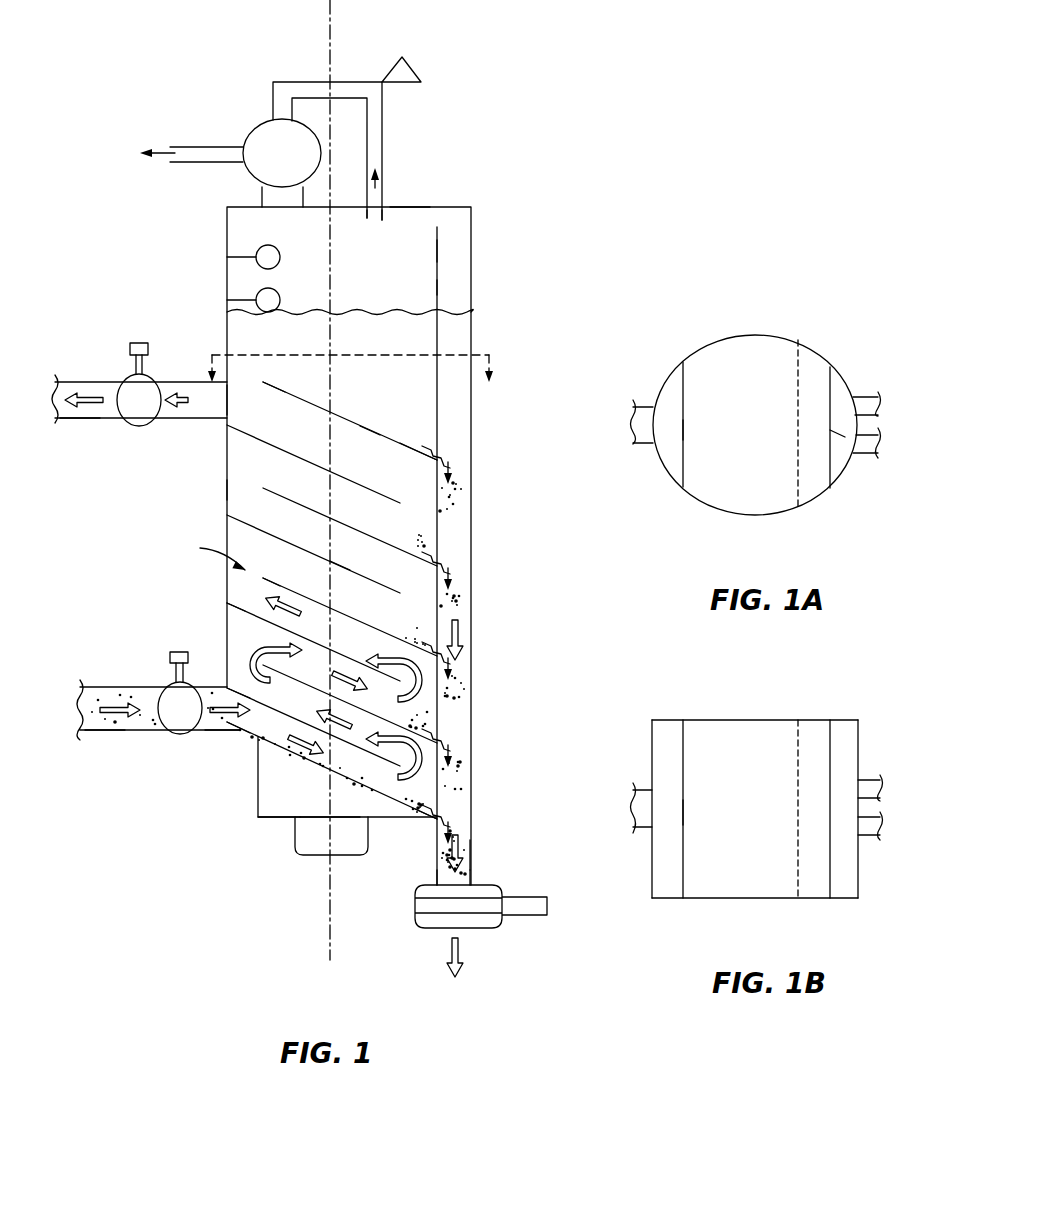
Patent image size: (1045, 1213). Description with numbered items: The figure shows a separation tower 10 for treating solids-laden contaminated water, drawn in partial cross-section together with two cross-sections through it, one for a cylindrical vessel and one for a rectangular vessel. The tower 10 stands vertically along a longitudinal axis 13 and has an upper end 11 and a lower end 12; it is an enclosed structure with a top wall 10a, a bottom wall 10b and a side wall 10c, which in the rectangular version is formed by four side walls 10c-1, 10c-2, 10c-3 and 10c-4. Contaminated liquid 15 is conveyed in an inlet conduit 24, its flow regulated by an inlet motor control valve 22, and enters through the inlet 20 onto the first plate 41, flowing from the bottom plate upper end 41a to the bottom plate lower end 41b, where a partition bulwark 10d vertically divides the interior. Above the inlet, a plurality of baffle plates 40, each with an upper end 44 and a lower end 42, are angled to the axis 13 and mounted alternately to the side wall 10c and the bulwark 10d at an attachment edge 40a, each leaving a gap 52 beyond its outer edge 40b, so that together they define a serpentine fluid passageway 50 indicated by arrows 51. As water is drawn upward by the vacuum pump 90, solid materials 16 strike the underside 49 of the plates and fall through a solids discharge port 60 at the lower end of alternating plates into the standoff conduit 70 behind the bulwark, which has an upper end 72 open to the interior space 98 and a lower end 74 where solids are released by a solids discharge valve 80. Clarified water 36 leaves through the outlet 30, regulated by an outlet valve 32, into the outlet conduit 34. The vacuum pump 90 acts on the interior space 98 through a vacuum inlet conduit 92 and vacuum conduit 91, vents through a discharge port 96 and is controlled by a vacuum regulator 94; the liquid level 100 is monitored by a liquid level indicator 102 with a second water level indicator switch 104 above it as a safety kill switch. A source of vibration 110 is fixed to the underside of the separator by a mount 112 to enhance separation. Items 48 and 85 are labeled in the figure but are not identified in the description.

In FIG. 1, the separation tower 10 is at (483, 180).
In FIG. 1, the upper end 11 is at (515, 205).
In FIG. 1, the lower end 12 is at (483, 842).
In FIG. 1, the longitudinal axis 13 is at (333, 30).
In FIG. 1, the contaminated liquid 15 is at (103, 720).
In FIG. 1, the solid materials 16 is at (437, 540).
In FIG. 1, the inlet 20 is at (207, 733).
In FIG. 1, the inlet motor control valve 22 is at (170, 700).
In FIG. 1, the inlet conduit 24 is at (100, 687).
In FIG. 1, the outlet 30 is at (228, 400).
In FIG. 1A, the outlet 30 is at (655, 425).
In FIG. 1B, the outlet 30 is at (652, 808).
In FIG. 1, the outlet valve 32 is at (130, 398).
In FIG. 1, the outlet conduit 34 is at (72, 382).
In FIG. 1A, the outlet conduit 34 is at (645, 405).
In FIG. 1B, the outlet conduit 34 is at (642, 790).
In FIG. 1, the clarified water 36 is at (92, 412).
In FIG. 1, the baffle plates 40 is at (312, 463).
In FIG. 1A, the baffle plates 40 is at (762, 485).
In FIG. 1B, the baffle plates 40 is at (762, 870).
In FIG. 1, the baffle plate attachment edge 40a is at (230, 602).
In FIG. 1, the baffle plate outer edge 40b is at (265, 382).
In FIG. 1, the first plate 41 is at (240, 737).
In FIG. 1, the bottom plate upper end 41a is at (236, 737).
In FIG. 1, the bottom plate lower end 41b is at (432, 825).
In FIG. 1, the plate lower end 42 is at (395, 443).
In FIG. 1A, the plate lower end 42 is at (818, 390).
In FIG. 1B, the plate lower end 42 is at (813, 773).
In FIG. 1, the plate upper end 44 is at (268, 383).
In FIG. 1A, the plate upper end 44 is at (685, 428).
In FIG. 1B, the plate upper end 44 is at (685, 812).
In FIG. 1, the tray spacing 48 is at (343, 567).
In FIG. 1, the underside of baffle plates 49 is at (380, 438).
In FIG. 1, the serpentine fluid passageway 50 is at (363, 650).
In FIG. 1A, the serpentine fluid passageway 50 is at (670, 392).
In FIG. 1B, the serpentine fluid passageway 50 is at (668, 777).
In FIG. 1, the arrows 51 is at (245, 645).
In FIG. 1, the gap 52 is at (207, 552).
In FIG. 1, the solids discharge port 60 is at (445, 450).
In FIG. 1, the standoff conduit 70 is at (452, 540).
In FIG. 1A, the standoff conduit 70 is at (838, 455).
In FIG. 1B, the standoff conduit 70 is at (845, 733).
In FIG. 1, the standoff conduit upper end 72 is at (455, 258).
In FIG. 1, the standoff conduit lower end 74 is at (470, 878).
In FIG. 1, the solids discharge valve 80 is at (485, 925).
In FIG. 1A, the solids discharge valve 80 is at (872, 425).
In FIG. 1B, the solids discharge valve 80 is at (875, 808).
In FIG. 1, the product stream 85 is at (445, 955).
In FIG. 1, the vacuum pump 90 is at (265, 140).
In FIG. 1, the vacuum conduit 91 is at (385, 143).
In FIG. 1, the vacuum inlet conduit 92 is at (378, 220).
In FIG. 1, the vacuum regulator 94 is at (408, 70).
In FIG. 1, the discharge port 96 is at (210, 145).
In FIG. 1, the interior space 98 is at (282, 230).
In FIG. 1, the liquid level 100 is at (455, 312).
In FIG. 1, the liquid level indicator 102 is at (258, 300).
In FIG. 1, the second water level indicator switch 104 is at (258, 255).
In FIG. 1, the source of vibration 110 is at (318, 855).
In FIG. 1, the mount 112 is at (278, 820).
In FIG. 1, the top wall 10a is at (413, 207).
In FIG. 1, the bottom wall 10b is at (365, 820).
In FIG. 1, the side wall 10c is at (227, 492).
In FIG. 1A, the side wall 10c is at (686, 495).
In FIG. 1, the partition bulwark 10d is at (440, 287).
In FIG. 1A, the partition bulwark 10d is at (822, 475).
In FIG. 1B, the first side wall 10c-1 is at (715, 720).
In FIG. 1B, the second side wall 10c-2 is at (700, 900).
In FIG. 1B, the third side wall 10c-3 is at (647, 875).
In FIG. 1B, the fourth side wall 10c-4 is at (860, 880).